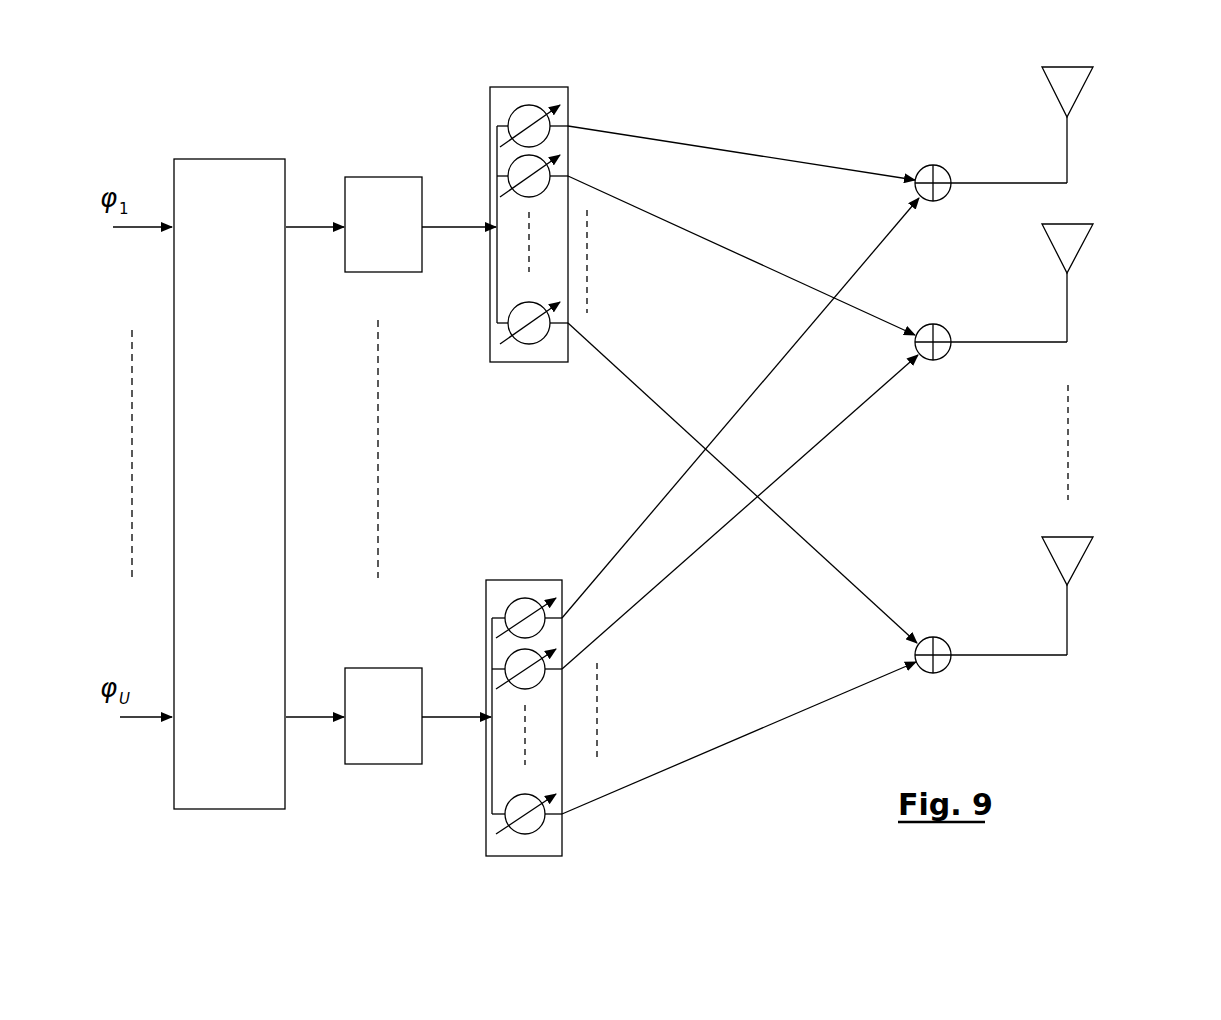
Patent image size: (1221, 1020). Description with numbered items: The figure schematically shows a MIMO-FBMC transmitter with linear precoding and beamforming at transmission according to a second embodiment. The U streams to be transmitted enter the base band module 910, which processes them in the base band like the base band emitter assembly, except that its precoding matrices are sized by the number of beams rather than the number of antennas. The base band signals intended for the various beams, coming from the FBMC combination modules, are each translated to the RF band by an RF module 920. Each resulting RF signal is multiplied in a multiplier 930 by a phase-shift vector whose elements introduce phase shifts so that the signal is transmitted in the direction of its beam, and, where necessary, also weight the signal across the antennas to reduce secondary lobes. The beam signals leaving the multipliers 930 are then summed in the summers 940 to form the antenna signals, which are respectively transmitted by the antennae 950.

The base band module 910 is at (236, 158).
The RF module 920 is at (376, 176).
The multiplier 930 is at (531, 86).
The summer 940 is at (942, 636).
The antenna 950 is at (1082, 97).